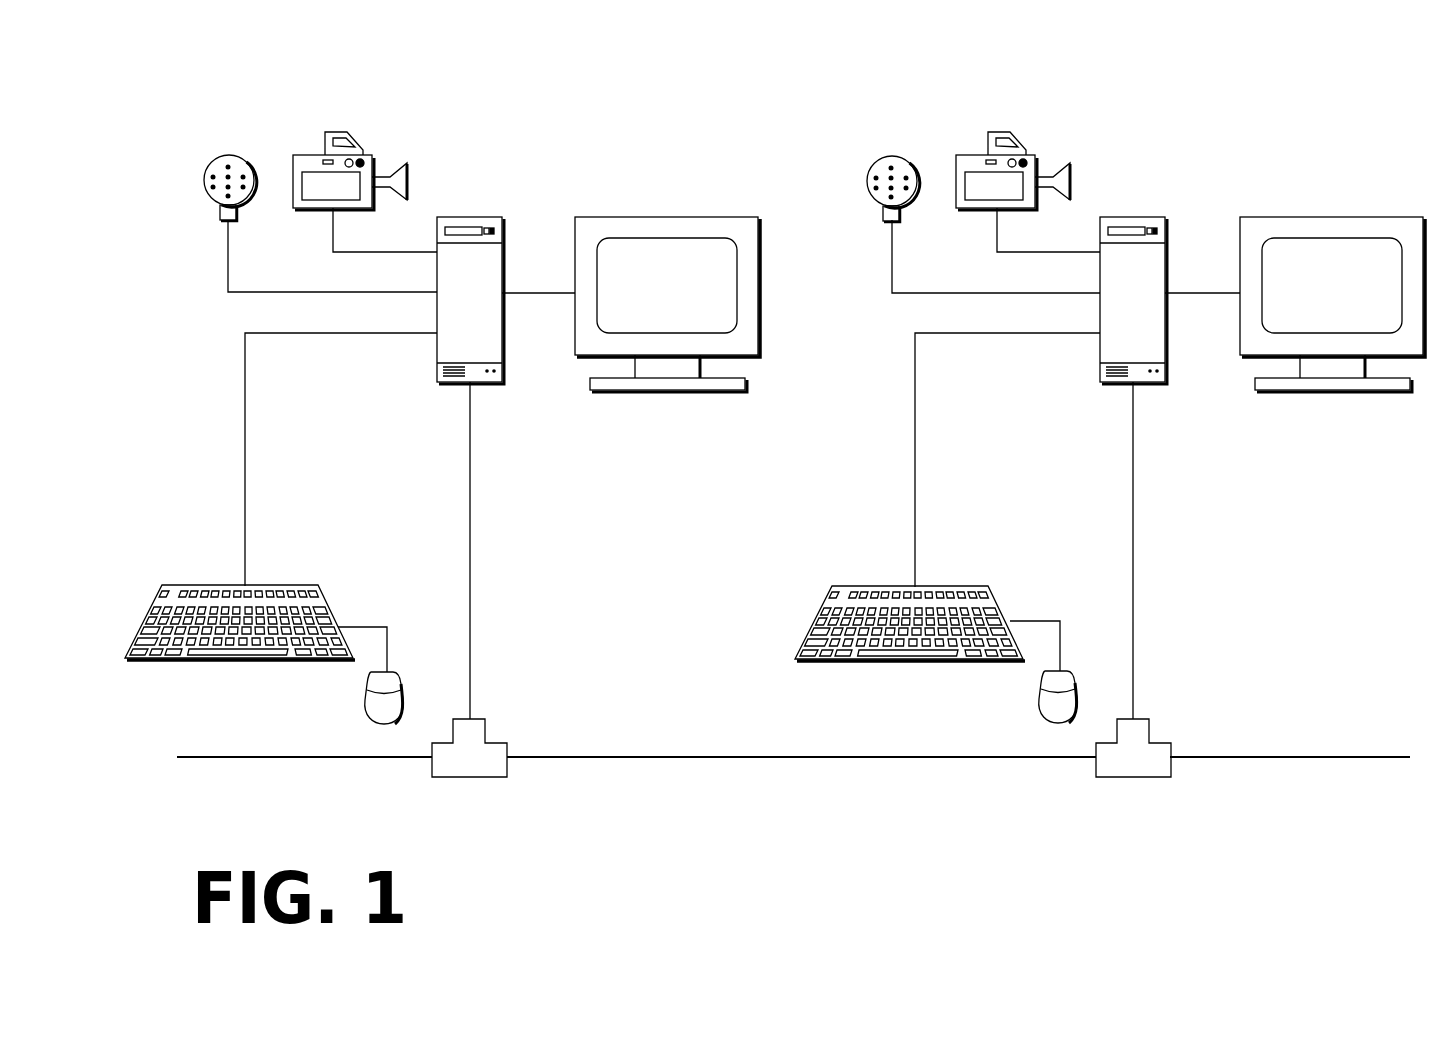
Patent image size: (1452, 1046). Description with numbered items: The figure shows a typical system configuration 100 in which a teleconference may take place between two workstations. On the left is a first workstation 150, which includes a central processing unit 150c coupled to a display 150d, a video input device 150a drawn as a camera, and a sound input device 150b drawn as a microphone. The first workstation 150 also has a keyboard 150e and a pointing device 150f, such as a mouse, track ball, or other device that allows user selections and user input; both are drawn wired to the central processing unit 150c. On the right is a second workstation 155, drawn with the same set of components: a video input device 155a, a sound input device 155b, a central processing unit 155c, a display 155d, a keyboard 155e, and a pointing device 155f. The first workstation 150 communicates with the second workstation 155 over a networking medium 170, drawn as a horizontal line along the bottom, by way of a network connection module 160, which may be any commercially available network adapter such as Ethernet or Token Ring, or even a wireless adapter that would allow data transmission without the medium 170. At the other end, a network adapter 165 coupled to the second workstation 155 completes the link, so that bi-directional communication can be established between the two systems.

The system configuration 100 is at (877, 818).
The first workstation 150 is at (641, 138).
The video input device 150a is at (368, 153).
The sound input device 150b is at (248, 167).
The central processing unit 150c is at (467, 217).
The display 150d is at (720, 217).
The keyboard 150e is at (307, 586).
The pointing device 150f is at (400, 682).
The second workstation 155 is at (1277, 129).
The video input device 155a is at (1031, 153).
The sound input device 155b is at (911, 165).
The central processing unit 155c is at (1130, 217).
The display 155d is at (1385, 217).
The keyboard 155e is at (980, 586).
The pointing device 155f is at (1075, 673).
The network connection module 160 is at (493, 740).
The network adapter 165 is at (1160, 742).
The networking medium 170 is at (697, 757).